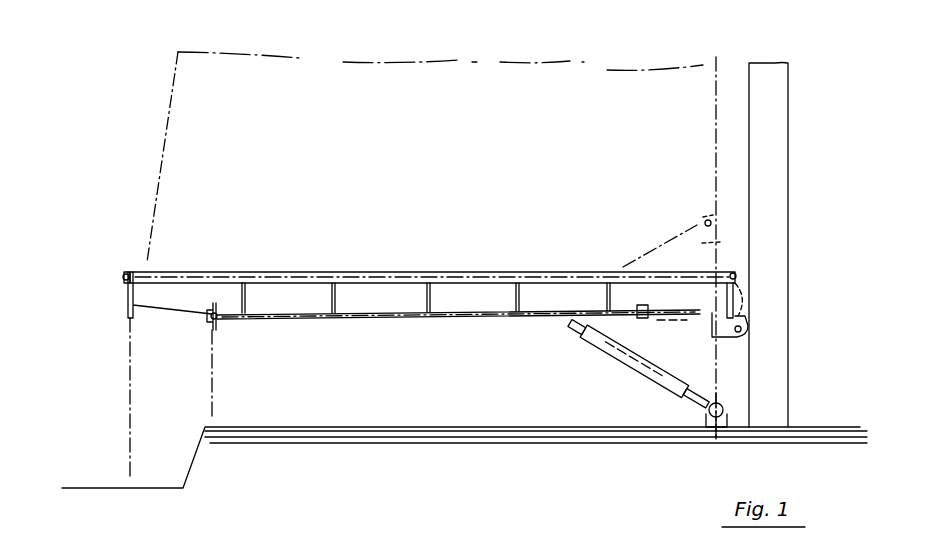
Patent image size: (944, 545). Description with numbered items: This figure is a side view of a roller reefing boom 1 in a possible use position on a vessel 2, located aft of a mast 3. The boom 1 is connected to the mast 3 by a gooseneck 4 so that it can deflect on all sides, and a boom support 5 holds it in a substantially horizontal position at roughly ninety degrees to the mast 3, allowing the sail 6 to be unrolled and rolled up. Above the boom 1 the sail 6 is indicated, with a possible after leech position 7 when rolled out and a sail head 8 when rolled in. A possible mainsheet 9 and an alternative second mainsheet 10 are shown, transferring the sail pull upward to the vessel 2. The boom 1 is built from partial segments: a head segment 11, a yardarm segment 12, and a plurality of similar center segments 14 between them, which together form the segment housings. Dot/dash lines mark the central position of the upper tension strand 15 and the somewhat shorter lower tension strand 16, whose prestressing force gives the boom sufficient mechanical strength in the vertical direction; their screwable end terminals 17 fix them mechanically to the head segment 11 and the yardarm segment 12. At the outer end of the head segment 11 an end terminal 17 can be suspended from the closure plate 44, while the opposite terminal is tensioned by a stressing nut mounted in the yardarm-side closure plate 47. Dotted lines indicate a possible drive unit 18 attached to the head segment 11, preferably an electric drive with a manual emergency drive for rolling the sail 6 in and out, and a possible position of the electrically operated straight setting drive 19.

The roller reefing boom 1 is at (118, 250).
The vessel 2 is at (335, 443).
The mast 3 is at (773, 160).
The gooseneck 4 is at (748, 340).
The boom support 5 is at (680, 385).
The sail 6 is at (143, 60).
The after leech position 7 is at (160, 155).
The sail head 8 is at (700, 243).
The mainsheet 9 is at (122, 380).
The second mainsheet 10 is at (208, 395).
The head segment 11 is at (600, 333).
The yardarm segment 12 is at (222, 305).
The center segments 14 is at (305, 305).
The upper tension strand 15 is at (280, 277).
The lower tension strand 16 is at (373, 310).
The end terminals 17 is at (123, 283).
The drive unit 18 is at (738, 300).
The straight setting drive 19 is at (672, 320).
The closure plate 44 is at (727, 297).
The yardarm-side closure plate 47 is at (137, 297).